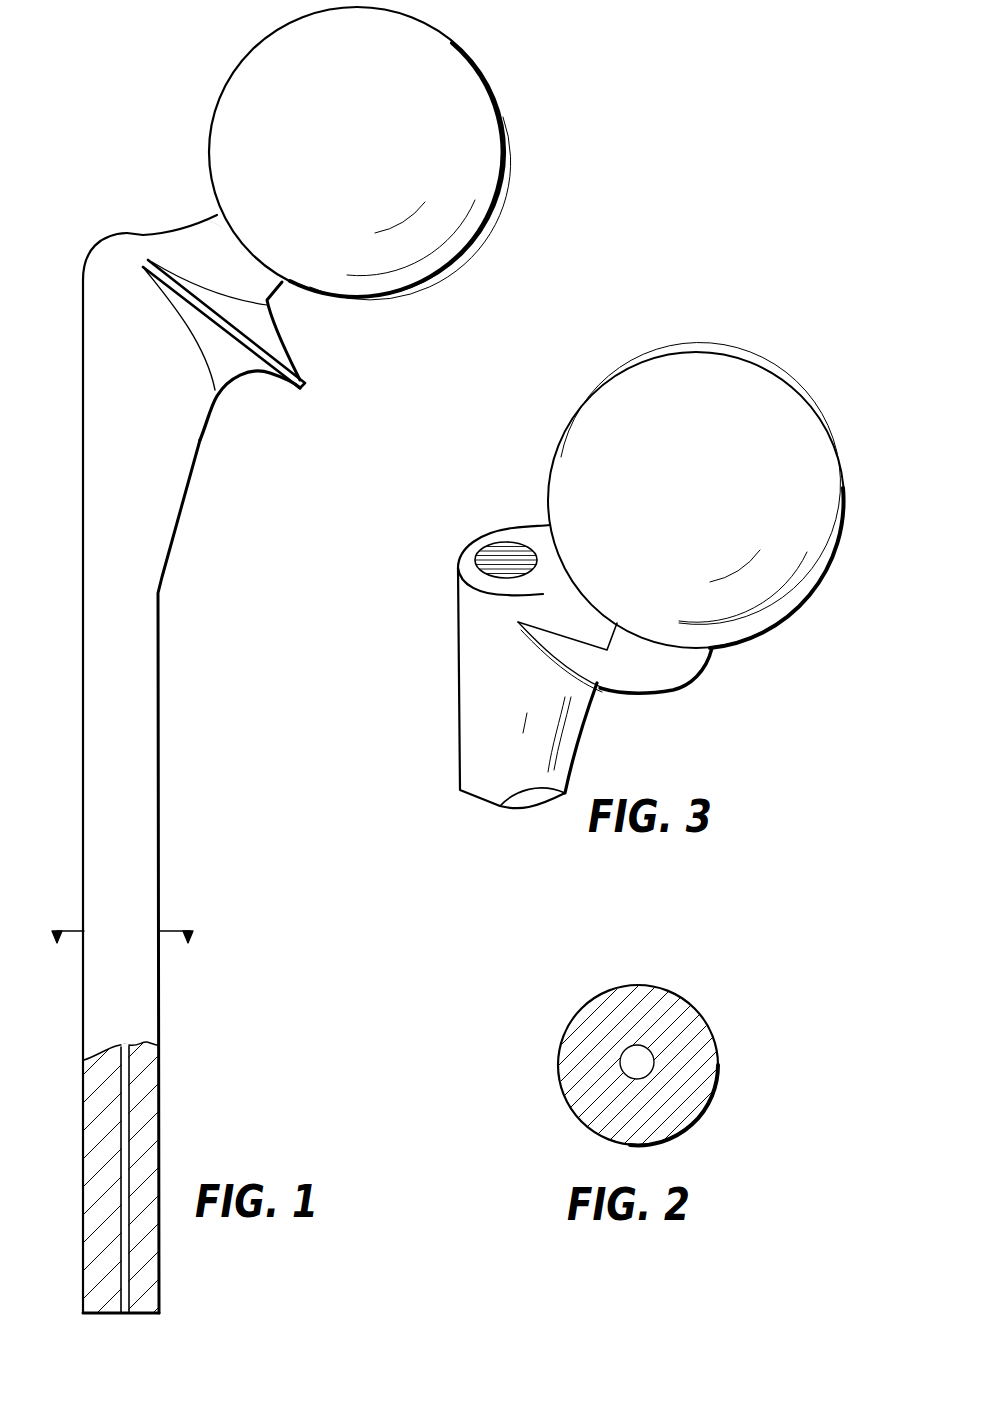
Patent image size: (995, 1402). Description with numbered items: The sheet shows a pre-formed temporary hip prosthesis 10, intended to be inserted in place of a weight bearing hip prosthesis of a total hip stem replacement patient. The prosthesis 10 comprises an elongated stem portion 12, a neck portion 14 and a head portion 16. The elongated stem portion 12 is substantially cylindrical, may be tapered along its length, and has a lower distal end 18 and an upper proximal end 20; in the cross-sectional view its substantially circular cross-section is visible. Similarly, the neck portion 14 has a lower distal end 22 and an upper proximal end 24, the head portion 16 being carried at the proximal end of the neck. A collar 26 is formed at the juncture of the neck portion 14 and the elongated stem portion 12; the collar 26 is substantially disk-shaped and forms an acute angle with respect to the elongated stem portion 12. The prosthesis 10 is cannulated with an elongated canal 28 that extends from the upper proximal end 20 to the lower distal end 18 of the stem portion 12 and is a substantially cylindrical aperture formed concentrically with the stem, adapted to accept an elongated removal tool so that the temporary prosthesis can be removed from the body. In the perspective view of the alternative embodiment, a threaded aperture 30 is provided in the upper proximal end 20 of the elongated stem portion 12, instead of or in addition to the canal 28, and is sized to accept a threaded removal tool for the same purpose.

In FIG. 1, the pre-formed temporary hip prosthesis 10 is at (282, 568).
In FIG. 1, the elongated stem portion 12 is at (151, 826).
In FIG. 2, the elongated stem portion 12 is at (713, 1028).
In FIG. 3, the elongated stem portion 12 is at (487, 760).
In FIG. 1, the neck portion 14 is at (185, 235).
In FIG. 3, the neck portion 14 is at (535, 542).
In FIG. 1, the head portion 16 is at (493, 133).
In FIG. 3, the head portion 16 is at (814, 562).
In FIG. 1, the lower distal end 18 is at (149, 1320).
In FIG. 1, the upper proximal end 20 is at (90, 258).
In FIG. 3, the upper proximal end 20 is at (472, 603).
In FIG. 1, the lower distal end 22 is at (140, 232).
In FIG. 1, the upper proximal end 24 is at (211, 187).
In FIG. 1, the collar 26 is at (247, 363).
In FIG. 3, the collar 26 is at (659, 675).
In FIG. 1, the elongated canal 28 is at (127, 1128).
In FIG. 2, the elongated canal 28 is at (632, 1067).
In FIG. 3, the threaded aperture 30 is at (490, 553).